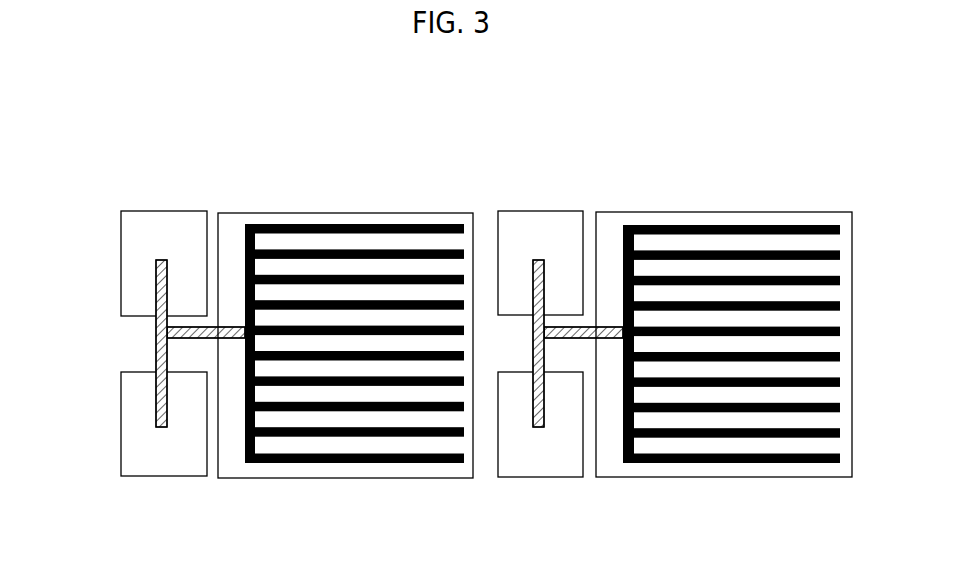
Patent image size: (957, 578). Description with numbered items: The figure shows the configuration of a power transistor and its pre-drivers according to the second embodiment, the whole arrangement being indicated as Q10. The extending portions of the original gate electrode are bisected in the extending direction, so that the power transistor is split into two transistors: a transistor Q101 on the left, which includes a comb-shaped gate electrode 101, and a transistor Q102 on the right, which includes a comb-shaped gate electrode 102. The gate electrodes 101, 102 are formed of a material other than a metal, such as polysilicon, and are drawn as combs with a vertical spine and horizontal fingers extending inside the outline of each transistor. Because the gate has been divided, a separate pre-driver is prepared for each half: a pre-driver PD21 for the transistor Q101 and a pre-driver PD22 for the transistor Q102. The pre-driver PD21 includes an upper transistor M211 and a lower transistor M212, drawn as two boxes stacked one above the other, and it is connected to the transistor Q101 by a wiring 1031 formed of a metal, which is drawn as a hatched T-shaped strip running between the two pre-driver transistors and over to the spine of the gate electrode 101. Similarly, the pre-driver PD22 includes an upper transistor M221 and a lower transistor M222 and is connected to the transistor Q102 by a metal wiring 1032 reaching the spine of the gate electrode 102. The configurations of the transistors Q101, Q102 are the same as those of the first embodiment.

The optical detector unit Q10 is at (715, 135).
The pre-driver PD21 is at (176, 200).
The pre-driver PD22 is at (523, 202).
The upper transistor M211 is at (120, 237).
The lower transistor M212 is at (123, 470).
The upper transistor M221 is at (575, 208).
The lower transistor M222 is at (570, 477).
The wiring 1031 is at (157, 355).
The wiring 1032 is at (533, 355).
The transistor Q101 is at (397, 212).
The transistor Q102 is at (785, 213).
The comb-shaped gate electrode 101 is at (268, 225).
The comb-shaped gate electrode 102 is at (645, 225).